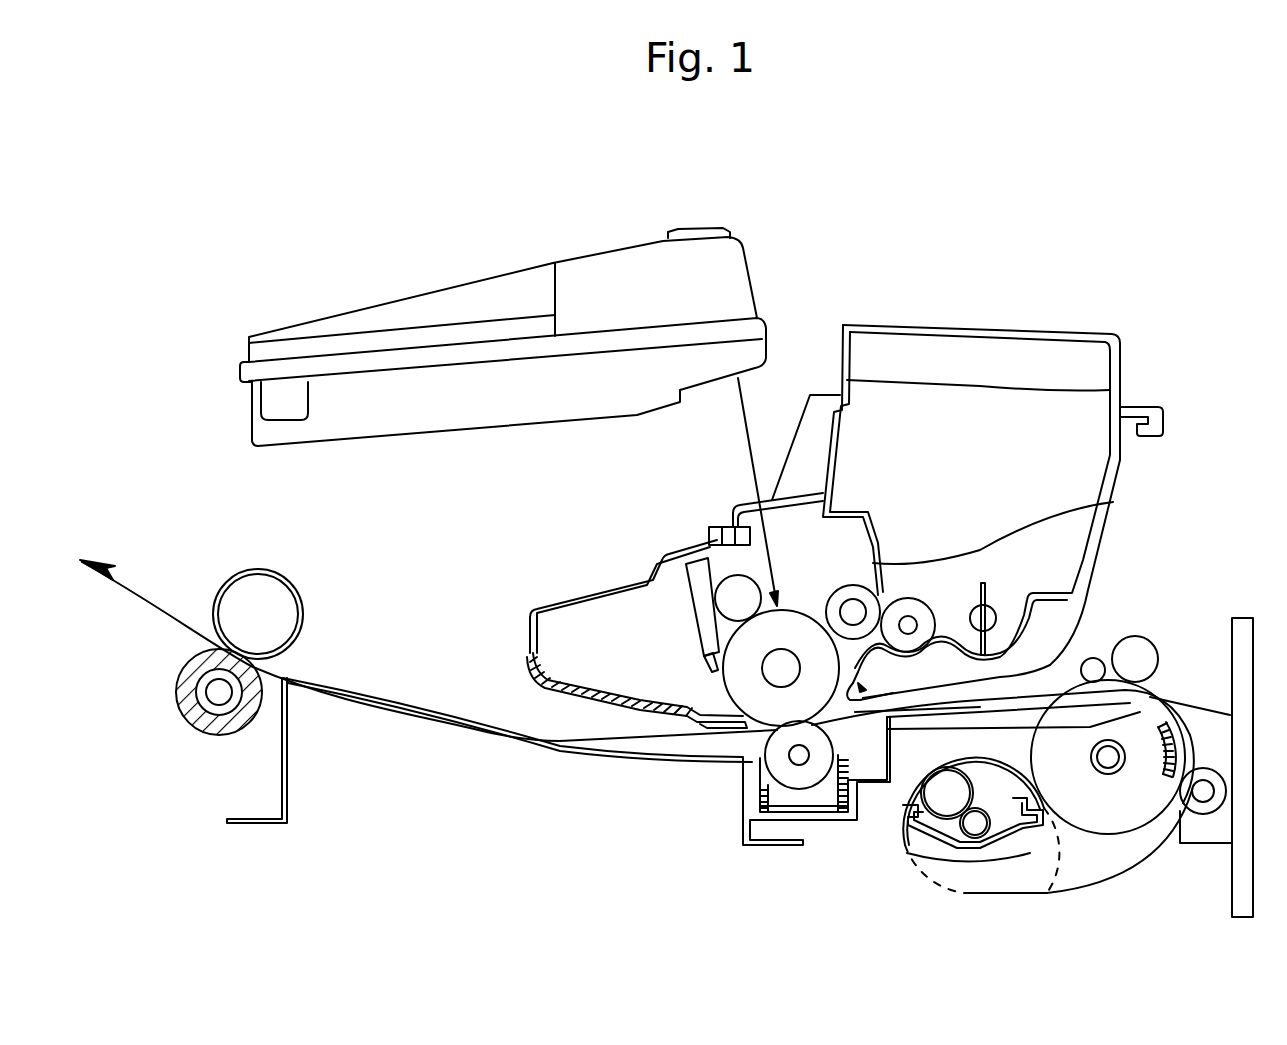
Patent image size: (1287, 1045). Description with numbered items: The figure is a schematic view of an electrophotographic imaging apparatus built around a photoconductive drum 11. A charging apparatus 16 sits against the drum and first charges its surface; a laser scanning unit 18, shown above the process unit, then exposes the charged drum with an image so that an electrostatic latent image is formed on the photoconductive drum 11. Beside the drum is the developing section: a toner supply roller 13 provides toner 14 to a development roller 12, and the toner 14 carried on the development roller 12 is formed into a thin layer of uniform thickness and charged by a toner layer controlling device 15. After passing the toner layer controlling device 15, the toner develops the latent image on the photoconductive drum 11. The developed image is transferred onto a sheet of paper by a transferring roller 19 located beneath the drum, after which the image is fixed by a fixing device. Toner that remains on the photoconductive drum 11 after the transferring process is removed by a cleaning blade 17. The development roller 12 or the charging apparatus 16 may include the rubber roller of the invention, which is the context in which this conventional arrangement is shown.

The photoconductive drum 11 is at (735, 635).
The development roller 12 is at (875, 596).
The toner supply roller 13 is at (935, 623).
The toner 14 is at (1038, 553).
The toner layer controlling device 15 is at (1113, 502).
The charging apparatus 16 is at (729, 576).
The cleaning blade 17 is at (713, 640).
The laser scanning unit 18 is at (472, 292).
The transferring roller 19 is at (823, 792).